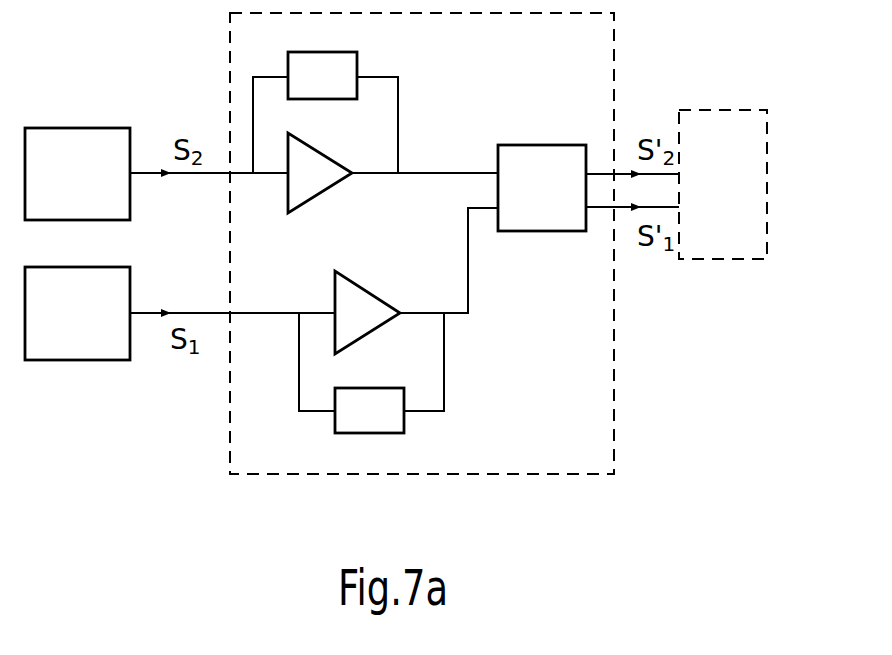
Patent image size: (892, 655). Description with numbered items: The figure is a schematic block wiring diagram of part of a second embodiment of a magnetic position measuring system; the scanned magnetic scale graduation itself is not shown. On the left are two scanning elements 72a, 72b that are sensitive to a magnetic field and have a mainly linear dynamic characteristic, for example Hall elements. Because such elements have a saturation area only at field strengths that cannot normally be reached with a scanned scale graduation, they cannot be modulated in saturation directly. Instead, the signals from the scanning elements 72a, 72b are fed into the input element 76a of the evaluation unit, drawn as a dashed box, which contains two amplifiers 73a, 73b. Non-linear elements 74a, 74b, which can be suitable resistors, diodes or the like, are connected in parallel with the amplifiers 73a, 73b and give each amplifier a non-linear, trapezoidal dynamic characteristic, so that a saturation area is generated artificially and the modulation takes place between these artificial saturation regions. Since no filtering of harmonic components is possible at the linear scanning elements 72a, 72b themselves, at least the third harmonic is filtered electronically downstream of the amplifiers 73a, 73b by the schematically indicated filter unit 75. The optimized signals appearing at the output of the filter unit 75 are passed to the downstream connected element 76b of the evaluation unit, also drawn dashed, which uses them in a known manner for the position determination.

The scanning element 72a is at (61, 351).
The scanning element 72b is at (56, 134).
The amplifier 73a is at (368, 298).
The amplifier 73b is at (315, 190).
The non-linear element 74a is at (404, 425).
The non-linear element 74b is at (353, 63).
The filter unit 75 is at (537, 150).
The input element of the evaluation unit 76a is at (568, 462).
The downstream connected element of the evaluation unit 76b is at (728, 113).